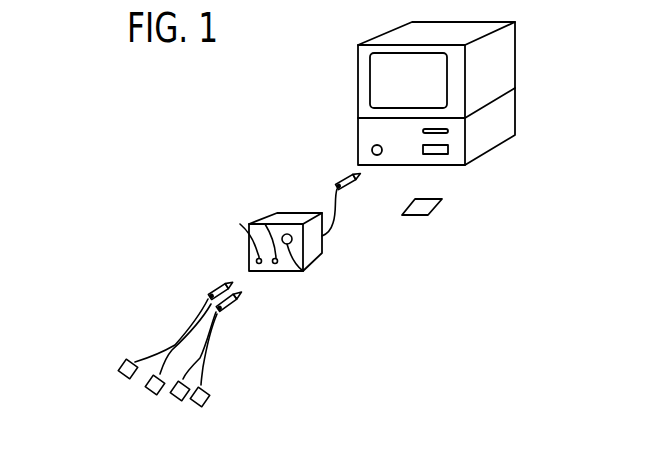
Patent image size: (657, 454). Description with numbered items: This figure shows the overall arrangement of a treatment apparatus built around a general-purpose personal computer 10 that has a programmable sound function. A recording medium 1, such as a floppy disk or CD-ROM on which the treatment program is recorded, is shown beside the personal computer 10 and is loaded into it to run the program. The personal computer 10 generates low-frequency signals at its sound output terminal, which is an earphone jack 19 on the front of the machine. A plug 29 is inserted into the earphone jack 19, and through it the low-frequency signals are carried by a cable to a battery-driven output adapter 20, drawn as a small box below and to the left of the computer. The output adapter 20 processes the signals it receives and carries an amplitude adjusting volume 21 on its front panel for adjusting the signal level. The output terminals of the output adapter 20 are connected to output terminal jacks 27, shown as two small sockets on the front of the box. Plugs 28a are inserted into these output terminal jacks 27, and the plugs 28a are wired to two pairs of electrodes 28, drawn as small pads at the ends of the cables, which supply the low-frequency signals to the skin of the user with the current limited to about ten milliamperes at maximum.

The recording medium 1 is at (433, 208).
The personal computer 10 is at (515, 113).
The earphone jack 19 is at (373, 143).
The output adapter 20 is at (318, 250).
The amplitude adjusting volume 21 is at (303, 271).
The output terminal jacks 27 is at (240, 224).
The electrodes 28 is at (133, 383).
The plugs 28a is at (213, 287).
The plug 29 is at (341, 183).